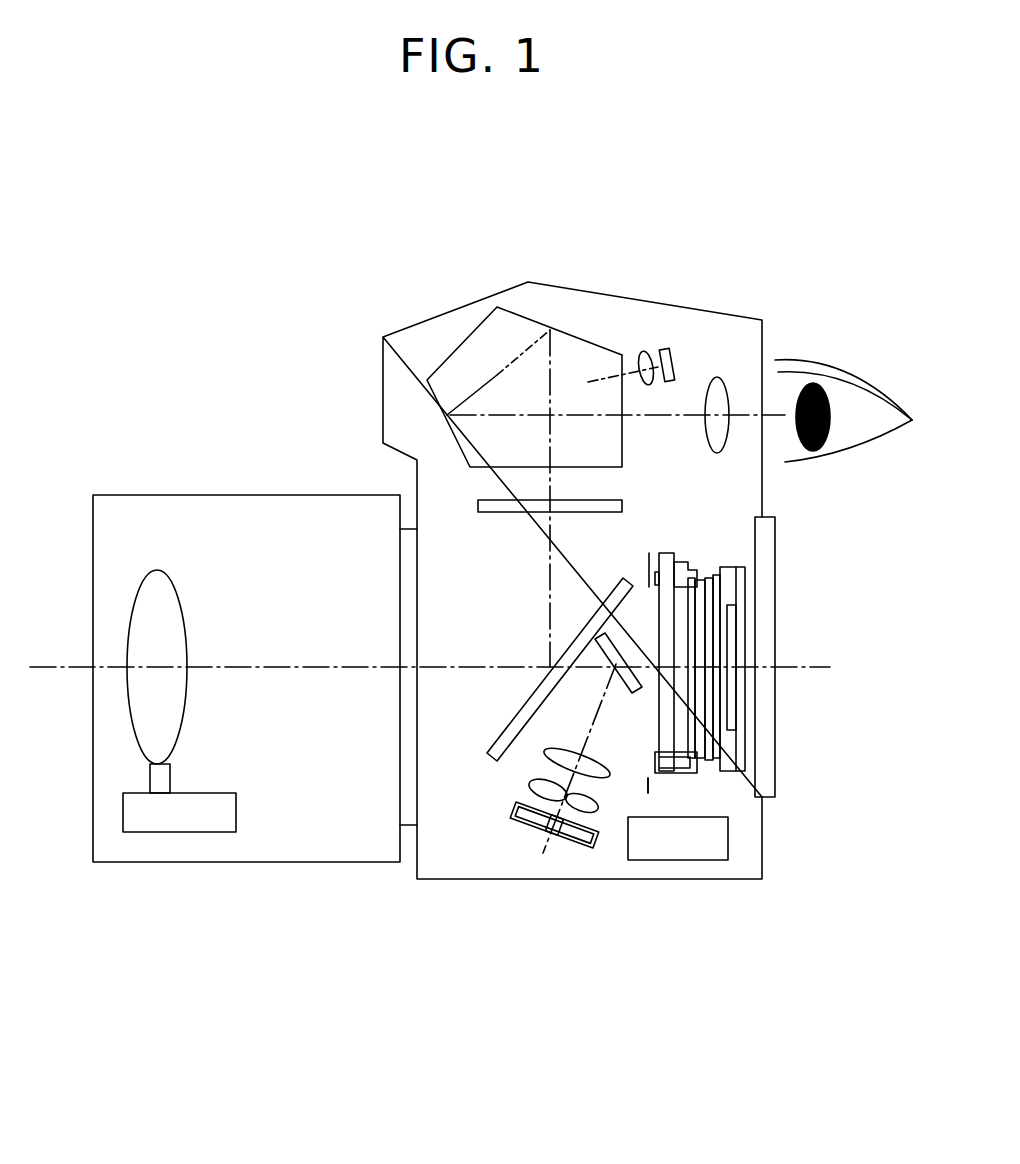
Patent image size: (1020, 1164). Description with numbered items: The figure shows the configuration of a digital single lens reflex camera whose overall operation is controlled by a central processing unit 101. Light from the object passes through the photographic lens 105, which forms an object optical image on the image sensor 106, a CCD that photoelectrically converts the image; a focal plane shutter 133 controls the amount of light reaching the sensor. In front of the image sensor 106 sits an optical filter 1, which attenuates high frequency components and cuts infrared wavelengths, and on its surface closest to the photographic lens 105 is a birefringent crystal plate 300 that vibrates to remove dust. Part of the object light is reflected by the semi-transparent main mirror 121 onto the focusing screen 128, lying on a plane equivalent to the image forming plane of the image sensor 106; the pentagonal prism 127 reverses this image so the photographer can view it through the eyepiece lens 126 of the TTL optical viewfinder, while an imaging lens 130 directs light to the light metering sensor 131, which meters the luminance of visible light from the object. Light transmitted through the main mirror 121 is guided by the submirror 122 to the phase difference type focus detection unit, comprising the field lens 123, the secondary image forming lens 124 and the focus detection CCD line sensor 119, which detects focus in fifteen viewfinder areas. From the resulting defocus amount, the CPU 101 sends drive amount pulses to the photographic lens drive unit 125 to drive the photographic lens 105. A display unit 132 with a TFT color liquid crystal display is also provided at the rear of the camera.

The optical filter 1 is at (720, 555).
The central processing unit 101 is at (728, 840).
The photographic lens 105 is at (157, 570).
The image sensor 106 is at (735, 658).
The focus detection CCD line sensor 119 is at (563, 852).
The semi-transparent main mirror 121 is at (510, 727).
The submirror 122 is at (613, 653).
The field lens 123 is at (543, 766).
The secondary image forming lens 124 is at (530, 797).
The photographic lens drive unit 125 is at (170, 832).
The eyepiece lens 126 is at (722, 378).
The pentagonal prism 127 is at (460, 347).
The focusing screen 128 is at (478, 505).
The imaging lens 130 is at (646, 352).
The light metering sensor 131 is at (670, 348).
The display unit 132 is at (765, 697).
The focal plane shutter 133 is at (650, 784).
The birefringent crystal plate 300 is at (663, 710).